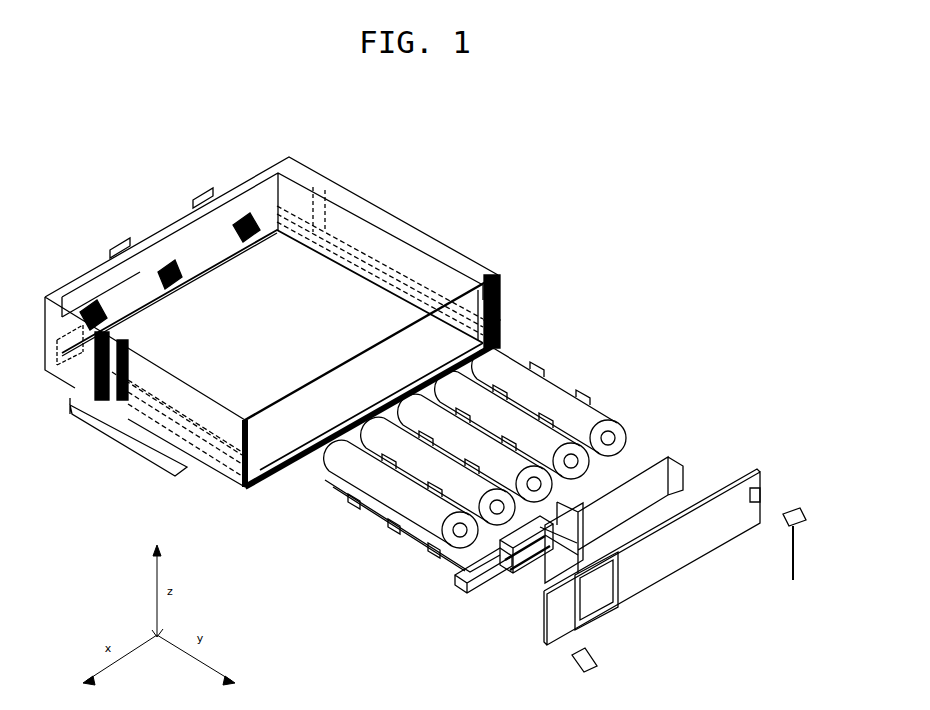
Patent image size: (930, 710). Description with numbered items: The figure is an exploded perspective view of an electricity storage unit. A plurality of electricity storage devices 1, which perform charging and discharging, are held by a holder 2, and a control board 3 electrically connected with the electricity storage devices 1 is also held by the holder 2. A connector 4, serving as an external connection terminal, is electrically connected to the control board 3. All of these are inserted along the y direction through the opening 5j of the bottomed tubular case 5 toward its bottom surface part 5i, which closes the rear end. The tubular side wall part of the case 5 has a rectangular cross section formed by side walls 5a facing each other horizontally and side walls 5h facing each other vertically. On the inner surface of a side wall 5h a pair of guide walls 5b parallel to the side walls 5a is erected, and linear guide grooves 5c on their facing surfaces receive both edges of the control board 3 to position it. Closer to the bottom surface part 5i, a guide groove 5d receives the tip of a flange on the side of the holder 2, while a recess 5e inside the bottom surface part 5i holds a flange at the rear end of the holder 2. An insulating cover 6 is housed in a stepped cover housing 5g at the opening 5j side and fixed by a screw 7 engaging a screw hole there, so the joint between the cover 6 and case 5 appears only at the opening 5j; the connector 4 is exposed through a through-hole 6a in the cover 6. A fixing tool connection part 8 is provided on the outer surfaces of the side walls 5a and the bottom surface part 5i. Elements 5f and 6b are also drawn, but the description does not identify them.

The electricity storage device 1 is at (583, 400).
The holder 2 is at (412, 540).
The control board 3 is at (477, 578).
The connector 4 is at (527, 577).
The bottomed tubular case 5 is at (457, 250).
The side wall 5a is at (500, 273).
The guide wall 5b is at (500, 332).
The guide groove 5c is at (367, 260).
The guide groove 5d is at (325, 238).
The recess 5e is at (172, 257).
The front corner post 5f is at (244, 490).
The cover housing 5g is at (500, 295).
The side wall 5h is at (160, 303).
The bottom surface part 5i is at (203, 243).
The opening 5j is at (317, 410).
The cover 6 is at (677, 560).
The through-hole 6a is at (608, 605).
The notch 6b is at (758, 500).
The screw 7 is at (689, 590).
The fixing tool connection part 8 is at (122, 443).